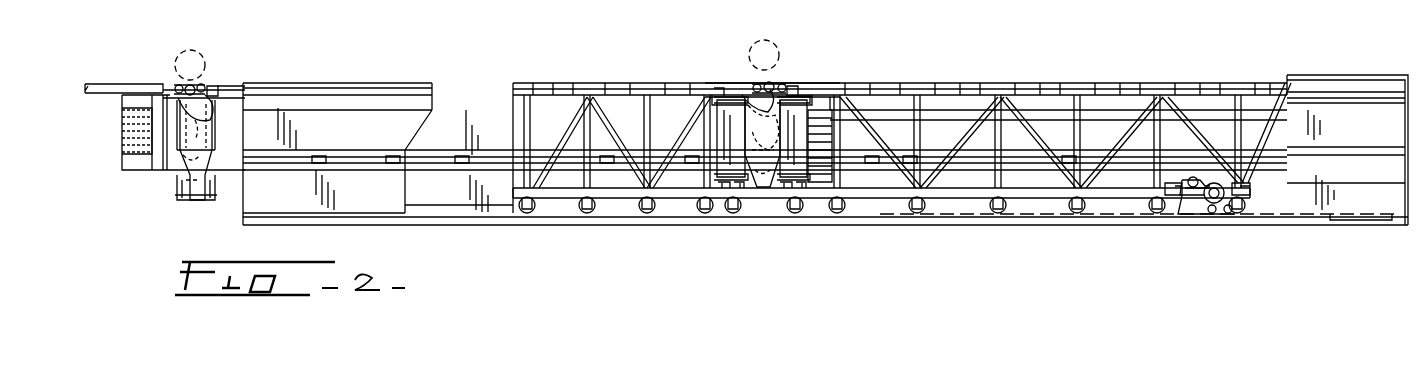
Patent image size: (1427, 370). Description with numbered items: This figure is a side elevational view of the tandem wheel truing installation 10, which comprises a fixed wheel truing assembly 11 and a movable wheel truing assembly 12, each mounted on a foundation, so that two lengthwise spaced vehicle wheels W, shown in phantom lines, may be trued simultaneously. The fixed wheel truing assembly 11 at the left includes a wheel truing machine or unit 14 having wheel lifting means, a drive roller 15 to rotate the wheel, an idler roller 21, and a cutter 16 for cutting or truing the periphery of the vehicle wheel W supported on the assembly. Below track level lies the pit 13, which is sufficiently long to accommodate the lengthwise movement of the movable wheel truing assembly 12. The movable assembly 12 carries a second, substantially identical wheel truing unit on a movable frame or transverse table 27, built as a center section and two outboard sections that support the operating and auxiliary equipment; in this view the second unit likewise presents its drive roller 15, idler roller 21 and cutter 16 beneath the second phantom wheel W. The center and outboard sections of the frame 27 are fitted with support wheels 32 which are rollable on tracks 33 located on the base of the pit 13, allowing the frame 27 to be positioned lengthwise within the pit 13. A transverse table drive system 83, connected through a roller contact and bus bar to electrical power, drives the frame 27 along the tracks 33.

The tandem wheel truing installation 10 is at (709, 135).
The fixed wheel truing assembly 11 is at (157, 176).
The movable wheel truing assembly 12 is at (1027, 206).
The pit 13 is at (1378, 78).
The wheel truing machine or unit 14 is at (190, 203).
The drive roller 15 is at (178, 86).
The cutter 16 is at (200, 102).
The idler roller 21 is at (208, 90).
The movable frame or transverse table 27 is at (624, 206).
The support wheels 32 is at (702, 214).
The tracks 33 is at (860, 218).
The transverse table drive system 83 is at (1200, 218).
The vehicle wheel W is at (193, 54).